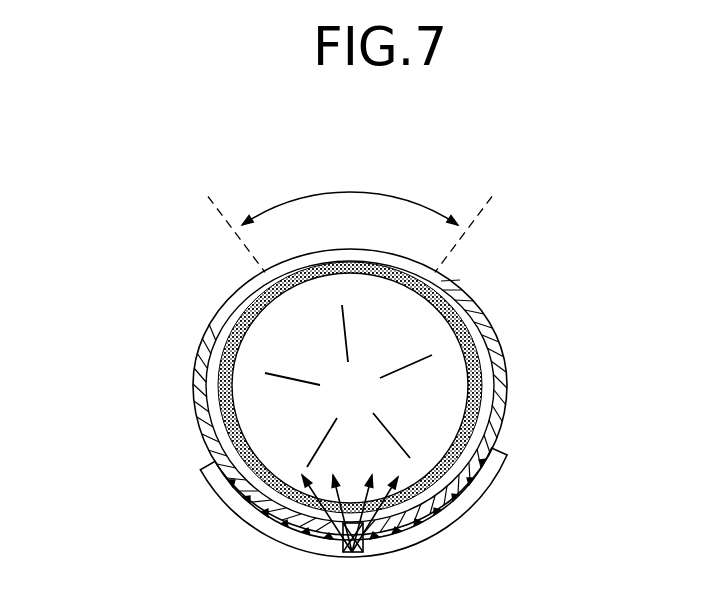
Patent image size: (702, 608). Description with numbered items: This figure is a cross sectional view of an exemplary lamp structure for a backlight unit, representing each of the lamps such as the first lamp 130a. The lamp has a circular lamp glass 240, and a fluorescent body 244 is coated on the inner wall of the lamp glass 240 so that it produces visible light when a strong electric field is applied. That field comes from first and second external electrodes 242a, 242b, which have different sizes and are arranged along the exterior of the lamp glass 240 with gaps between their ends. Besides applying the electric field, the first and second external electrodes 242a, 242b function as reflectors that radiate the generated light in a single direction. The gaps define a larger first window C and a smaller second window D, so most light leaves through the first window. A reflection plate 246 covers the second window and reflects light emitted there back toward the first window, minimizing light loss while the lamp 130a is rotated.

The first lamp 130a is at (223, 159).
The lamp glass 240 is at (463, 290).
The first external electrode 242a is at (201, 375).
The second external electrode 242b is at (493, 338).
The fluorescent body 244 is at (483, 380).
The reflection plate 246 is at (502, 458).